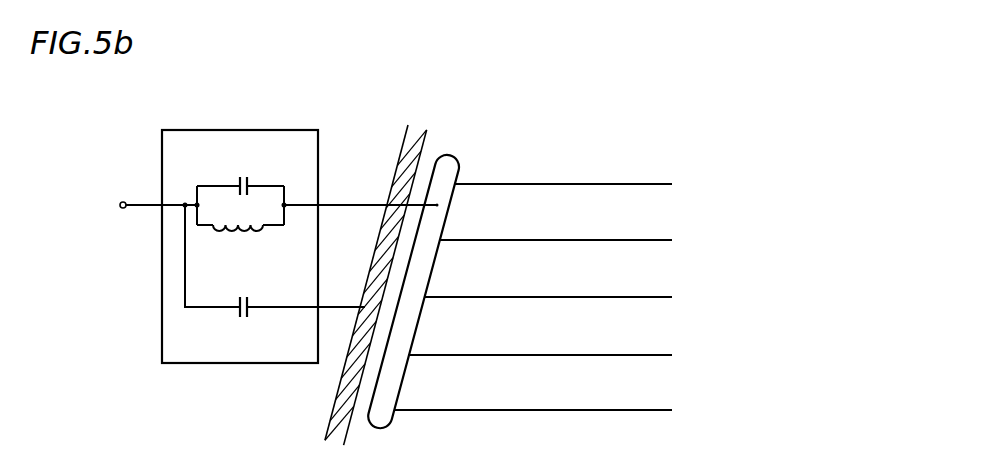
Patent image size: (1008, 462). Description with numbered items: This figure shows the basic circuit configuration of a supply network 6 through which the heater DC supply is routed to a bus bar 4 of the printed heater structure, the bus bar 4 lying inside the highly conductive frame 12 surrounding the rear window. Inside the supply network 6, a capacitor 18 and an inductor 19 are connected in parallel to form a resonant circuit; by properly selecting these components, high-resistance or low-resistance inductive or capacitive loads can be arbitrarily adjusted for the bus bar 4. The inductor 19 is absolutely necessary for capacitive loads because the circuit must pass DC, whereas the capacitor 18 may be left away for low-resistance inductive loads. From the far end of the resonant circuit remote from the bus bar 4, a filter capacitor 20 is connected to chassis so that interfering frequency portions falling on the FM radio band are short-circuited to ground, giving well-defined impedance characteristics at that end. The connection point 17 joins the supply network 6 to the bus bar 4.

The bus bar 4 is at (457, 165).
The supply network 6 is at (192, 355).
The highly conductive frame 12 is at (333, 418).
The connection point 17 is at (438, 207).
The capacitor 18 is at (243, 175).
The inductor 19 is at (245, 231).
The filter capacitor 20 is at (243, 300).